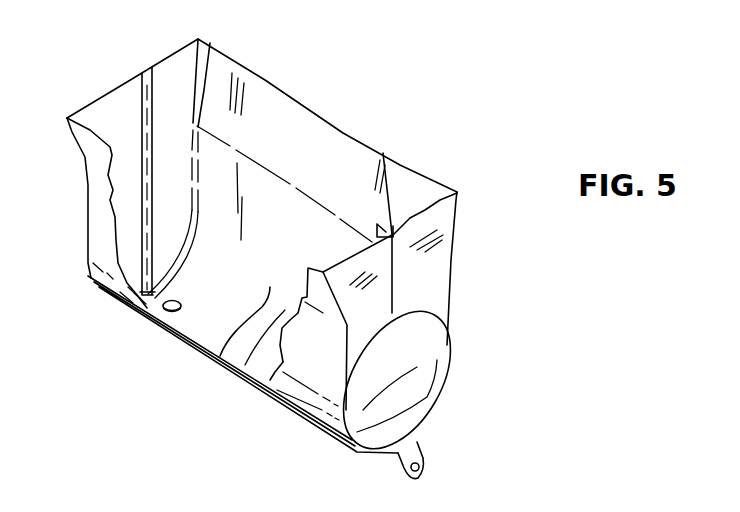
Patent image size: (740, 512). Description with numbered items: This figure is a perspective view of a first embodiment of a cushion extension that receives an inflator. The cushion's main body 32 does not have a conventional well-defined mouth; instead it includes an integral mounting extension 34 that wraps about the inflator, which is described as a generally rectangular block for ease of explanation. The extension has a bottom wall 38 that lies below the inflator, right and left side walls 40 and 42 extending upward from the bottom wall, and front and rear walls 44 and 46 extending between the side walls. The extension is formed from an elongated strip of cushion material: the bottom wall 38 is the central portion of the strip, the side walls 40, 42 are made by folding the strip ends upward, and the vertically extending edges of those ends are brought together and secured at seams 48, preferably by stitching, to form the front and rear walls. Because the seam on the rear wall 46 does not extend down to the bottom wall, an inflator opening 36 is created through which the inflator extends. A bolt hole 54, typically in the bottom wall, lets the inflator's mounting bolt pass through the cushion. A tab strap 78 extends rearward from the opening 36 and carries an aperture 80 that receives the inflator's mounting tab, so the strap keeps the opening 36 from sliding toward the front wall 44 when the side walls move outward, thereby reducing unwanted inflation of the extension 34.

The main body 32 is at (88, 152).
The mounting extension 34 is at (100, 246).
The inflator opening 36 is at (447, 314).
The bottom wall 38 is at (223, 355).
The right side wall 40 is at (335, 153).
The left side wall 42 is at (298, 366).
The front wall 44 is at (108, 110).
The rear wall 46 is at (444, 243).
The seams 48 is at (157, 102).
The bolt hole 54 is at (167, 311).
The tab strap 78 is at (420, 447).
The aperture 80 is at (407, 470).